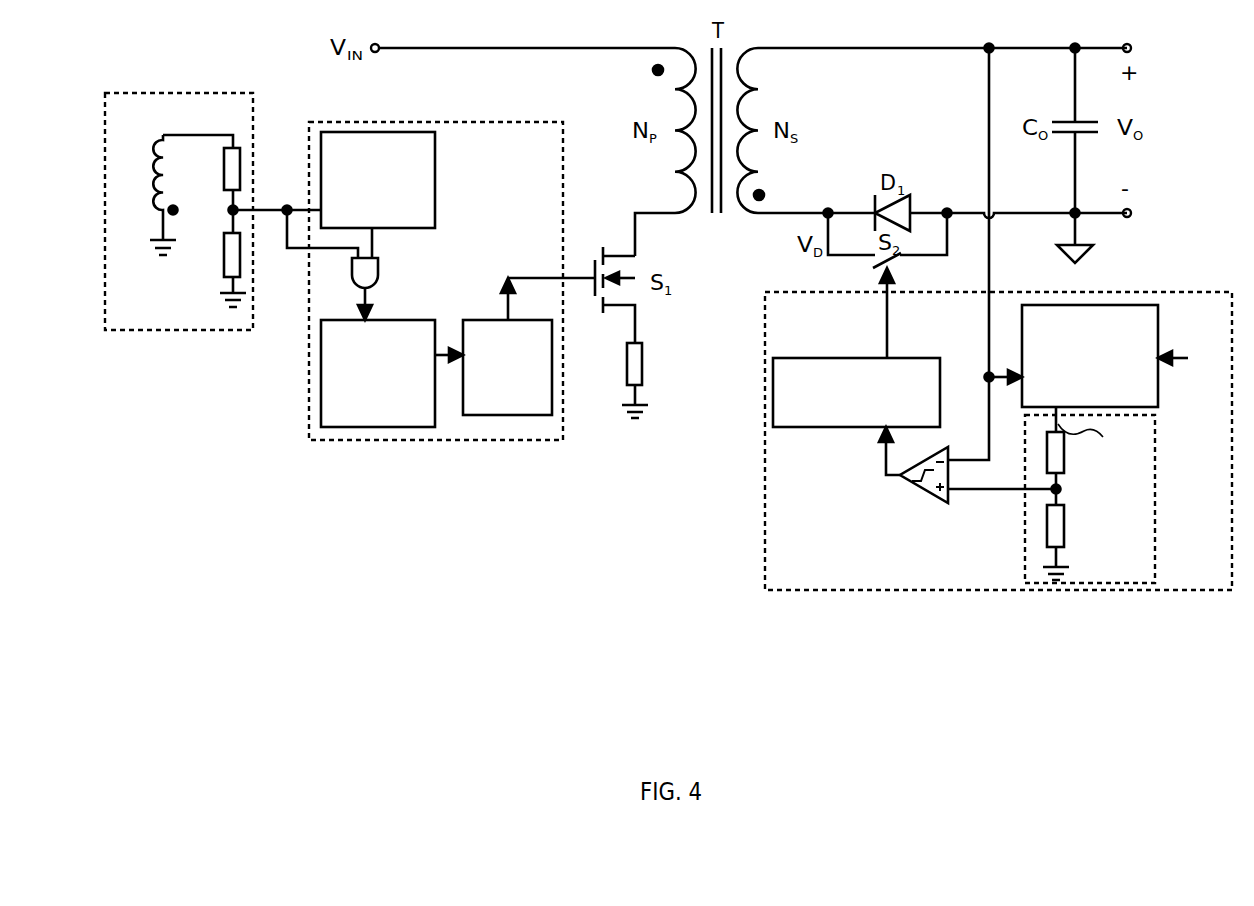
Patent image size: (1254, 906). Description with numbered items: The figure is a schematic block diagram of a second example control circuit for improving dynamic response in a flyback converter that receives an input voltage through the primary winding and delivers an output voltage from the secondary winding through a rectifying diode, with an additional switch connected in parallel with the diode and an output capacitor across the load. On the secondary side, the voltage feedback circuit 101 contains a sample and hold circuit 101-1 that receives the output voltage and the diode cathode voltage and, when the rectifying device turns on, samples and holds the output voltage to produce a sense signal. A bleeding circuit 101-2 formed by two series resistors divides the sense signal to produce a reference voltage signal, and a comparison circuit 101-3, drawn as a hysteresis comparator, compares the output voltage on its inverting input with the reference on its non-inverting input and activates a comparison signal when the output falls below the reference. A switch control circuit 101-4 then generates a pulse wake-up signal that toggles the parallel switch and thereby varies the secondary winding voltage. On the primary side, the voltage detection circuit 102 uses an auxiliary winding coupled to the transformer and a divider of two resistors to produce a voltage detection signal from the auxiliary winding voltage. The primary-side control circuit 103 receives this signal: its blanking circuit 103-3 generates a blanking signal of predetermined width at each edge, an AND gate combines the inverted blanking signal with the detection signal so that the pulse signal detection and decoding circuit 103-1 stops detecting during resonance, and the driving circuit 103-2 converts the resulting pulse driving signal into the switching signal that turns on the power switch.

The voltage feedback circuit 101 is at (818, 582).
The sample and hold circuit 101-1 is at (1118, 399).
The bleeding circuit 101-2 is at (1142, 501).
The comparison circuit 101-3 is at (914, 486).
The switch control circuit 101-4 is at (923, 417).
The voltage detection circuit 102 is at (152, 321).
The primary-side control circuit 103 is at (545, 159).
The pulse signal detection and decoding circuit 103-1 is at (408, 411).
The driving circuit 103-2 is at (535, 411).
The blanking circuit 103-3 is at (407, 221).